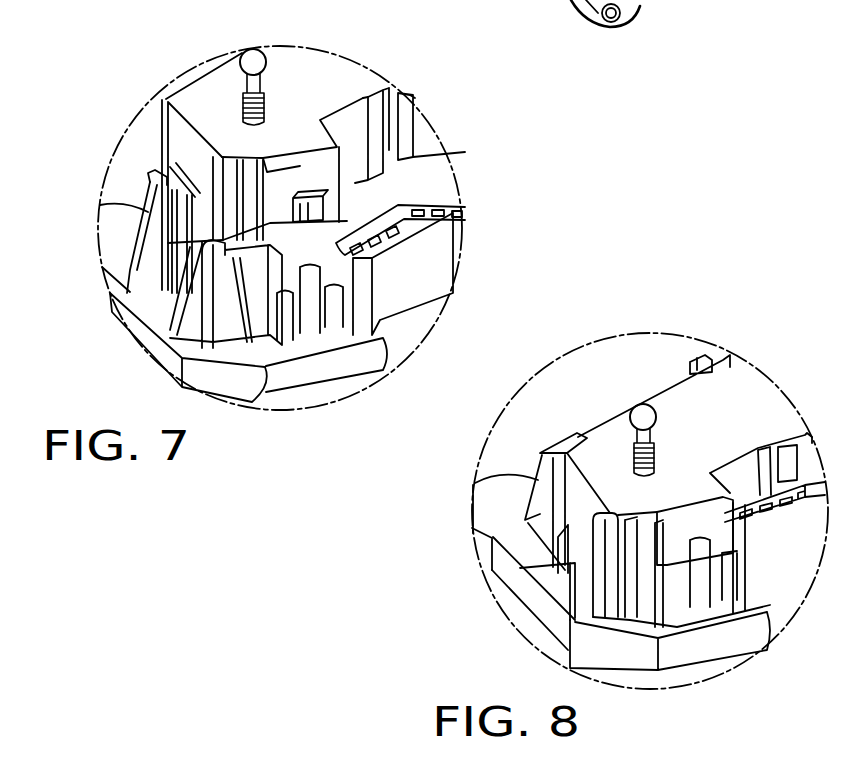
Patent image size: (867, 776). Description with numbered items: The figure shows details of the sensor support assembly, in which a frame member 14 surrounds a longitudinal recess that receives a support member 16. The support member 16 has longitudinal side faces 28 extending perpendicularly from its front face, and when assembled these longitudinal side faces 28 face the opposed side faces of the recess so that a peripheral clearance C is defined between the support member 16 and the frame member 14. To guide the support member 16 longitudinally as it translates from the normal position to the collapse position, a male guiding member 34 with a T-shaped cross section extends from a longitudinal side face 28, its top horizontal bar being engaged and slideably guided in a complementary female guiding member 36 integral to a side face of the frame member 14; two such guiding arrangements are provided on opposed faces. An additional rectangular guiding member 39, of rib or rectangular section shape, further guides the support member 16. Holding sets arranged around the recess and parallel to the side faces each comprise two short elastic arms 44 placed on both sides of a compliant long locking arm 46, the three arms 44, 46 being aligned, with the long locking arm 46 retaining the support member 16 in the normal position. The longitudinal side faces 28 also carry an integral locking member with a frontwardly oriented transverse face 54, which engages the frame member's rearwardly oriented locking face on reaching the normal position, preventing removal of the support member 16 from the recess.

In FIG. 7, the frame member 14 is at (358, 370).
In FIG. 8, the frame member 14 is at (715, 635).
In FIG. 7, the support member 16 is at (222, 82).
In FIG. 8, the longitudinal side faces 28 is at (700, 517).
In FIG. 7, the male guiding member 34 is at (392, 133).
In FIG. 7, the female guiding member 36 is at (408, 200).
In FIG. 7, the rectangular guiding member 39 is at (162, 127).
In FIG. 7, the short elastic arms 44 is at (172, 270).
In FIG. 7, the long locking arm 46 is at (183, 277).
In FIG. 7, the frontwardly oriented transverse face 54 is at (305, 185).
In FIG. 7, the peripheral clearance C is at (352, 153).